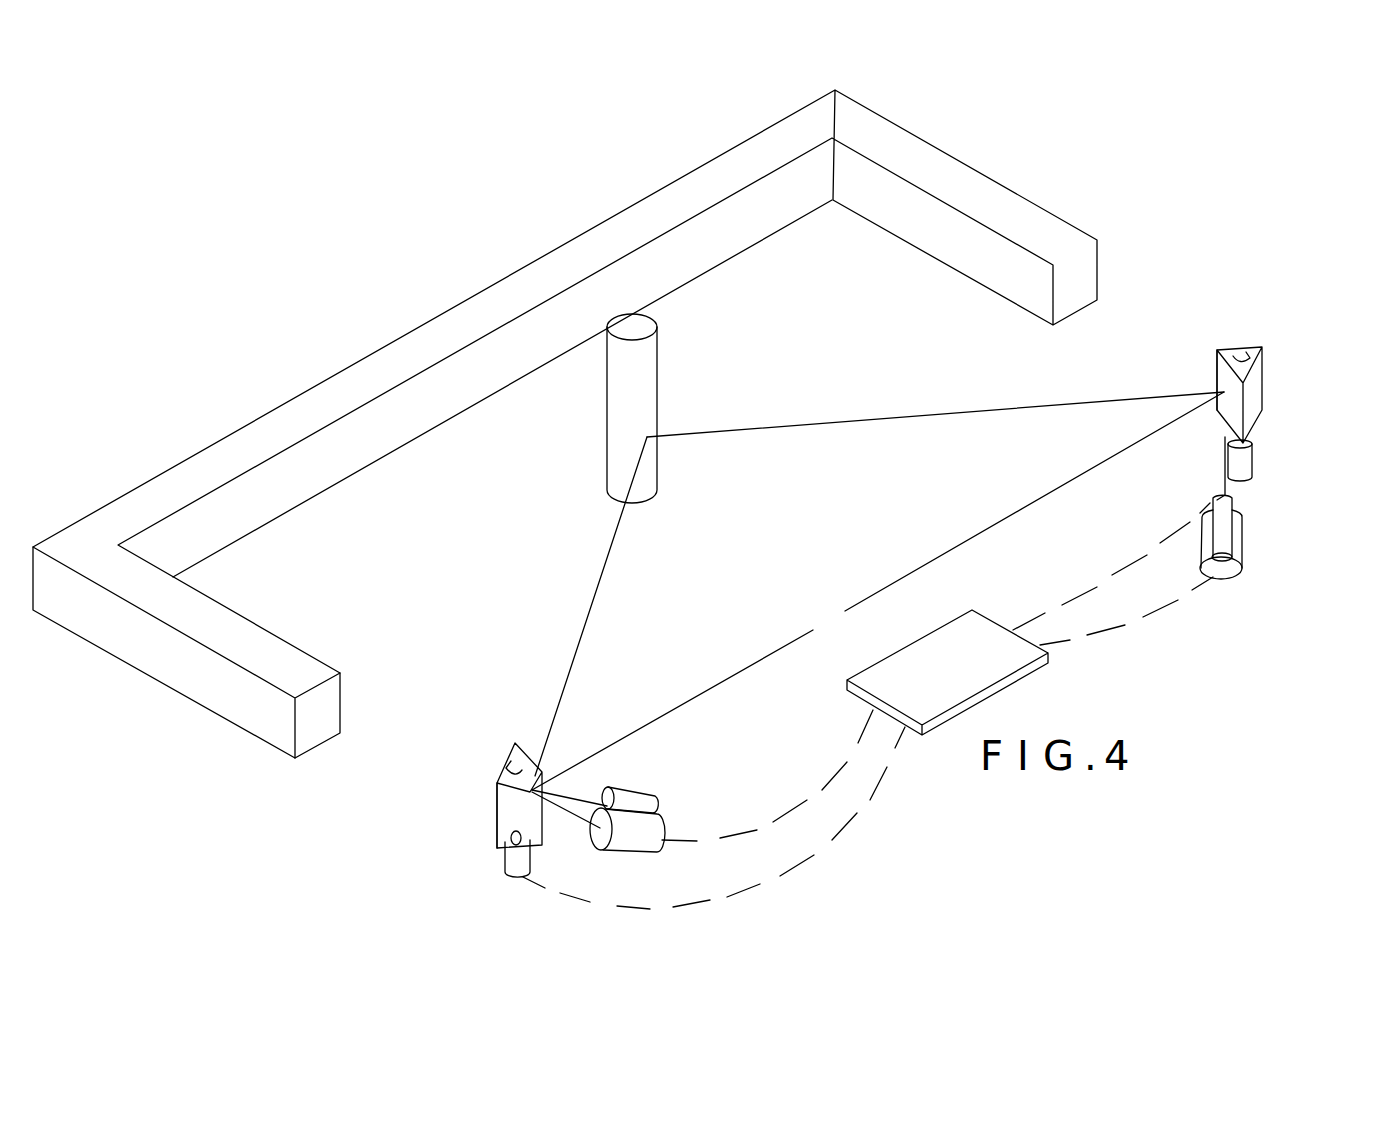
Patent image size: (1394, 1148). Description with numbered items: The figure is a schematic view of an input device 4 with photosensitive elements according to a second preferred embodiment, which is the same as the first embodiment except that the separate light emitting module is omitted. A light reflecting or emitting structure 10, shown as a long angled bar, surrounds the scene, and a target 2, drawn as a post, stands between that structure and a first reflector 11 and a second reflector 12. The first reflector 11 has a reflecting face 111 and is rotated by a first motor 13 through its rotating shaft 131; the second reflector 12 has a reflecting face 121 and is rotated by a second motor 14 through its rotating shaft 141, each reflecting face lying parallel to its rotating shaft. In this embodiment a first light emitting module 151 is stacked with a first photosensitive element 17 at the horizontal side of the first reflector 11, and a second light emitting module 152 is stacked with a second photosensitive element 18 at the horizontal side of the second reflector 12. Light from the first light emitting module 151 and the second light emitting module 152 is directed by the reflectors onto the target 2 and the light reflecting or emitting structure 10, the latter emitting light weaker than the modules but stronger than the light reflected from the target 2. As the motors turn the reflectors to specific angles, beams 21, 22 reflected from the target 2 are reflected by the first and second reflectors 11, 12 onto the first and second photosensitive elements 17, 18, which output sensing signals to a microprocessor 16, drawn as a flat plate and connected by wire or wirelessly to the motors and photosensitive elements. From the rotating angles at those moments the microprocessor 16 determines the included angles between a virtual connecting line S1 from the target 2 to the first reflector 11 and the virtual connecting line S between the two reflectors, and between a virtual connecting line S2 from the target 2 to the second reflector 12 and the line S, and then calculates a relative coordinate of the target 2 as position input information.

The input device 4 is at (514, 237).
The light reflecting or emitting structure 10 is at (1068, 244).
The target 2 is at (646, 322).
The beam 22 is at (795, 423).
The beam 21 is at (595, 592).
The virtual connecting line S is at (878, 591).
The virtual connecting line S1 is at (538, 684).
The virtual connecting line S2 is at (912, 403).
The first reflector 11 is at (513, 752).
The reflecting face 111 is at (541, 818).
The rotating shaft 131 is at (497, 823).
The first motor 13 is at (505, 860).
The first light emitting module 151 is at (650, 798).
The first photosensitive element 17 is at (652, 830).
The microprocessor 16 is at (930, 712).
The second reflector 12 is at (1260, 350).
The reflecting face 121 is at (1220, 380).
The rotating shaft 141 is at (1252, 445).
The second motor 14 is at (1243, 467).
The second photosensitive element 18 is at (1235, 537).
The second light emitting module 152 is at (1210, 577).